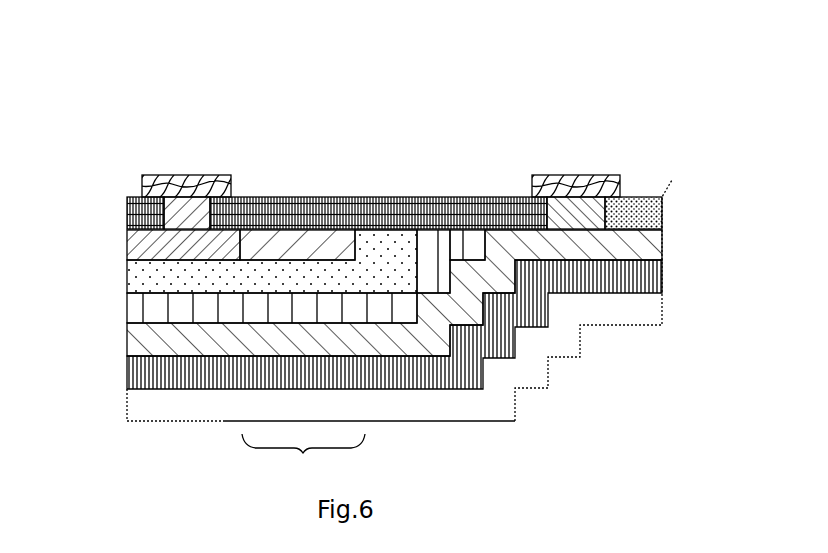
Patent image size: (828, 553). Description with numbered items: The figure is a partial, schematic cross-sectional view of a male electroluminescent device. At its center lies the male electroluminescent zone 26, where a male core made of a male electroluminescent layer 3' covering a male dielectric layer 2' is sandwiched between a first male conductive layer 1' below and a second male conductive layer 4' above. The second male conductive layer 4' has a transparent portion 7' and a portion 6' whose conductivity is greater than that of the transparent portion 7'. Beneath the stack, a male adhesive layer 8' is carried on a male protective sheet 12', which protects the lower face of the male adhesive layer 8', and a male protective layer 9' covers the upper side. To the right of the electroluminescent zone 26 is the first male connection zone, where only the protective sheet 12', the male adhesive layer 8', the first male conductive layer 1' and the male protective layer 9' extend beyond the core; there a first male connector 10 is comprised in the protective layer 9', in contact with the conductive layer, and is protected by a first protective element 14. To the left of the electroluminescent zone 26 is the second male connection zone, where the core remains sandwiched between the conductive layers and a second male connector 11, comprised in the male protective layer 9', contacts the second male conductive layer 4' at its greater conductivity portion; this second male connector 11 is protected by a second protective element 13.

The first male conductive layer 1' is at (359, 293).
The male dielectric layer 2' is at (272, 276).
The male electroluminescent layer 3' is at (233, 261).
The second male conductive layer 4' is at (202, 226).
The greater conductivity portion 6' is at (123, 165).
The transparent portion 7' is at (371, 182).
The male adhesive layer 8' is at (354, 331).
The male protective layer 9' is at (327, 192).
The first male connector 10 is at (593, 205).
The second male connector 11 is at (197, 210).
The male protective sheet 12' is at (358, 322).
The second protective element 13 is at (178, 183).
The first protective element 14 is at (568, 178).
The male electroluminescent zone 26 is at (303, 456).